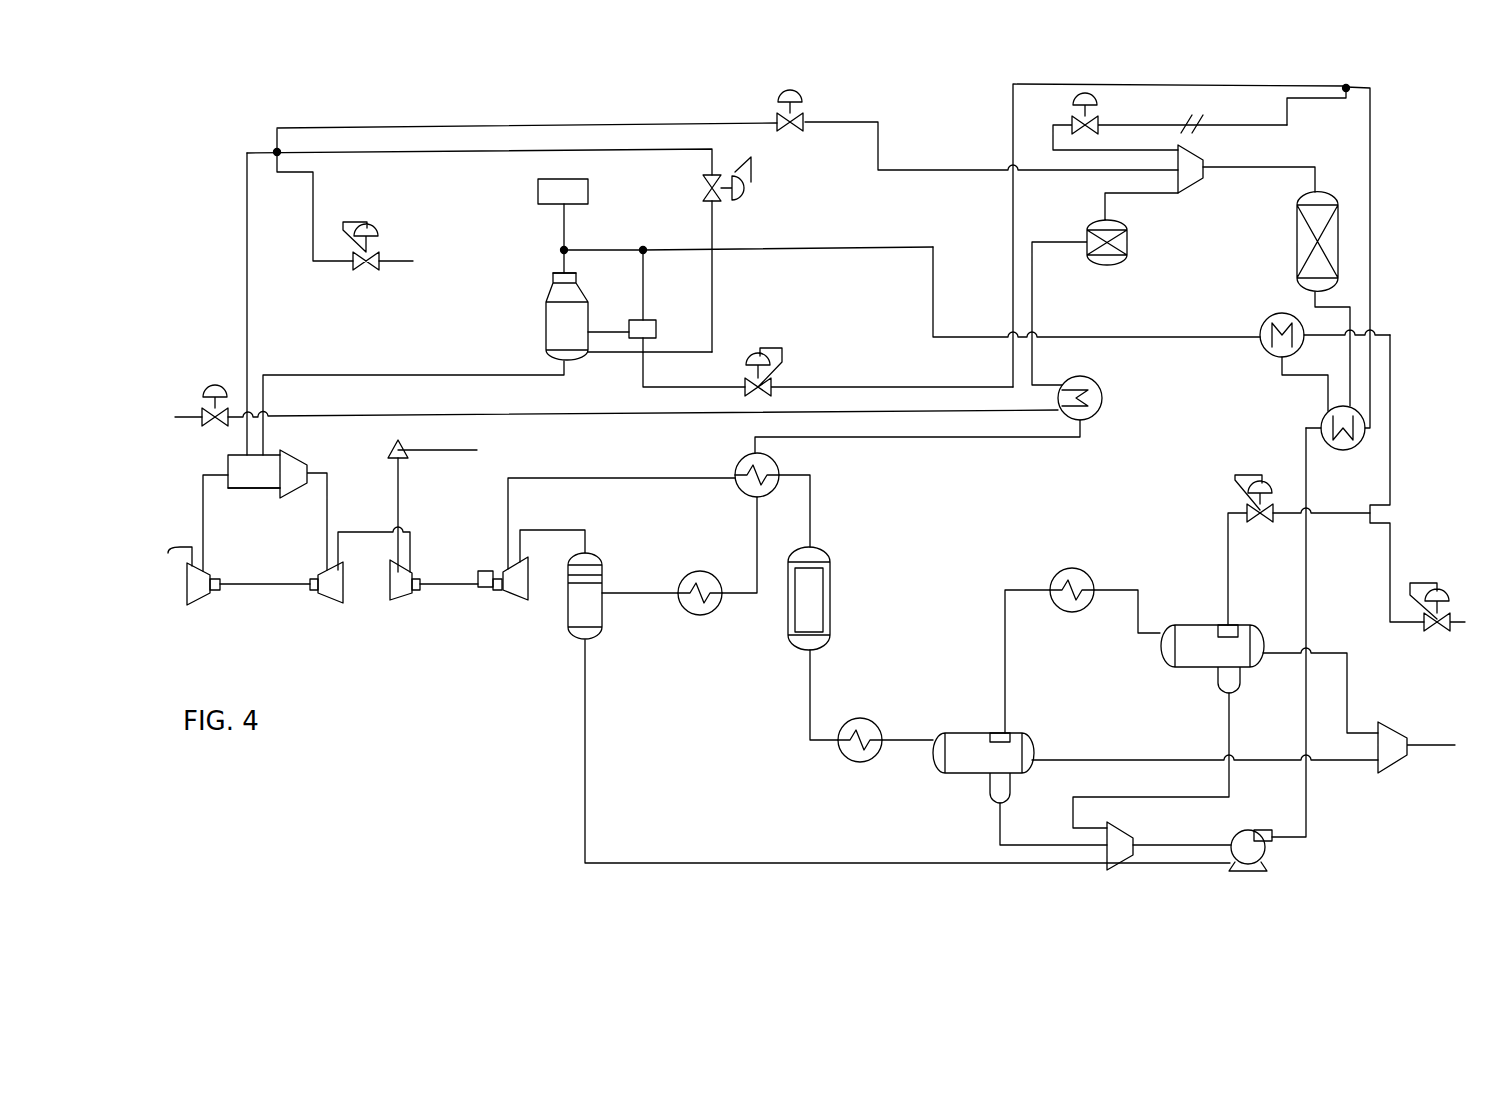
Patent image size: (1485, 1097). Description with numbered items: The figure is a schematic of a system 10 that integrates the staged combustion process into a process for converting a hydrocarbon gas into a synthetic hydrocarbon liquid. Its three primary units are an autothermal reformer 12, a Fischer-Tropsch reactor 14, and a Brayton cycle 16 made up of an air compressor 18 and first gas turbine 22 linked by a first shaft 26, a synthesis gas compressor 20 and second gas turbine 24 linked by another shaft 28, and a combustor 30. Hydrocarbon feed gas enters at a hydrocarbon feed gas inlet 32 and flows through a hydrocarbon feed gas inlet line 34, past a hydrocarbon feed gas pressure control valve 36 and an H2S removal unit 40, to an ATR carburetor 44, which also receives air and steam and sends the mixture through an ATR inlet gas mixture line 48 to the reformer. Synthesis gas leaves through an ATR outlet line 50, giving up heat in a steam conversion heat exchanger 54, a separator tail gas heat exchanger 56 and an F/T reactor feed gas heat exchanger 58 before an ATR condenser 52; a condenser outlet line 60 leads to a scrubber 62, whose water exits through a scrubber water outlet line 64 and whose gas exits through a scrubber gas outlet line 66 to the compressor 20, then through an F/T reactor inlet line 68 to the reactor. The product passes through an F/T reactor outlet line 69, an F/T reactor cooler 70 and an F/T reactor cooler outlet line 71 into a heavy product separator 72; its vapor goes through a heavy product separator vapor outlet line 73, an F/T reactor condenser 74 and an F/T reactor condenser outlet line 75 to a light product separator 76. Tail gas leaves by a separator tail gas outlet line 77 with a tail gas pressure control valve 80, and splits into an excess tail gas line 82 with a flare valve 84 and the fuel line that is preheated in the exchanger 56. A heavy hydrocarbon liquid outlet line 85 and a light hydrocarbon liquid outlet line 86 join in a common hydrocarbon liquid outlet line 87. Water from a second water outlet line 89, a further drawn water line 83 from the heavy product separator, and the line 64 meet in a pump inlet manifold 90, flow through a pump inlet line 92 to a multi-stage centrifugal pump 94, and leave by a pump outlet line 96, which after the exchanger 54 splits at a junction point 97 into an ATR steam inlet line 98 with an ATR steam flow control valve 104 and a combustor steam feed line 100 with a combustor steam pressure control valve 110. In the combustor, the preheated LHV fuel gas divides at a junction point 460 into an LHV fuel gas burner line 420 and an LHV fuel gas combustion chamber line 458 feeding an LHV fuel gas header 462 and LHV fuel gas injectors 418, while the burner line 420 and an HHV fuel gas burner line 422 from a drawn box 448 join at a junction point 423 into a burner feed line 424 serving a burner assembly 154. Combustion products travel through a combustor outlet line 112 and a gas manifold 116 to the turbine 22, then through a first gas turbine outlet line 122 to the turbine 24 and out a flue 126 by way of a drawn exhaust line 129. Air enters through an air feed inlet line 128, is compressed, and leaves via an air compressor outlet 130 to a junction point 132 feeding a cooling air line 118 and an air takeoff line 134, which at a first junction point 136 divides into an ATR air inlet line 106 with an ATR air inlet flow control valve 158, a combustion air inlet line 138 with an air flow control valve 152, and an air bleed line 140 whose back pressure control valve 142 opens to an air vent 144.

The system 10 is at (276, 108).
The autothermal reformer 12 is at (1297, 238).
The Fischer-Tropsch reactor 14 is at (830, 612).
The Brayton cycle 16 is at (270, 630).
The air compressor 18 is at (201, 605).
The synthesis gas compressor 20 is at (512, 598).
The first gas turbine 22 is at (325, 600).
The second gas turbine 24 is at (391, 600).
The first shaft 26 is at (278, 594).
The shaft 28 is at (465, 580).
The combustor 30 is at (546, 323).
The hydrocarbon feed gas inlet 32 is at (190, 410).
The hydrocarbon feed gas inlet line 34 is at (540, 420).
The hydrocarbon feed gas pressure control valve 36 is at (223, 386).
The H2S removal unit 40 is at (1127, 250).
The ATR carburetor 44 is at (1205, 192).
The ATR inlet gas mixture line 48 is at (1281, 175).
The ATR outlet line 50 is at (1350, 350).
The ATR condenser 52 is at (698, 618).
The steam conversion heat exchanger 54 is at (1349, 452).
The separator tail gas heat exchanger 56 is at (1266, 318).
The F/T reactor feed gas heat exchanger 58 is at (745, 460).
The condenser outlet line 60 is at (626, 600).
The scrubber 62 is at (570, 615).
The scrubber water outlet line 64 is at (588, 776).
The scrubber gas outlet line 66 is at (590, 540).
The F/T reactor inlet line 68 is at (812, 503).
The F/T reactor outlet line 69 is at (808, 712).
The F/T reactor cooler 70 is at (845, 758).
The F/T reactor cooler outlet line 71 is at (918, 740).
The heavy product separator 72 is at (984, 733).
The heavy product separator vapor outlet line 73 is at (1005, 645).
The F/T reactor condenser 74 is at (1052, 572).
The F/T reactor condenser outlet line 75 is at (1096, 588).
The light product separator 76 is at (1210, 622).
The separator tail gas outlet line 77 is at (1290, 520).
The tail gas pressure control valve 80 is at (1276, 496).
The excess tail gas line 82 is at (1390, 571).
The line 83 is at (1000, 835).
The flare valve 84 is at (1445, 598).
The heavy hydrocarbon liquid outlet line 85 is at (1103, 760).
The light hydrocarbon liquid outlet line 86 is at (1347, 700).
The common hydrocarbon liquid outlet line 87 is at (1428, 748).
The second water outlet line 89 is at (1190, 797).
The pump inlet manifold 90 is at (1125, 830).
The pump inlet line 92 is at (1190, 843).
The multi-stage centrifugal pump 94 is at (1245, 830).
The pump outlet line 96 is at (1304, 716).
The junction point 97 is at (1350, 93).
The ATR steam inlet line 98 is at (1238, 125).
The combustor steam feed line 100 is at (1012, 220).
The ATR steam flow control valve 104 is at (1096, 104).
The ATR air inlet line 106 is at (666, 118).
The combustor steam pressure control valve 110 is at (745, 366).
The combustor outlet line 112 is at (289, 374).
The gas manifold 116 is at (290, 457).
The cooling air line 118 is at (250, 490).
The first gas turbine outlet line 122 is at (355, 531).
The flue 126 is at (408, 446).
The air feed inlet line 128 is at (175, 541).
The line 129 is at (400, 492).
The air compressor outlet 130 is at (208, 547).
The junction point 132 is at (220, 470).
The air takeoff line 134 is at (247, 278).
The first junction point 136 is at (275, 150).
The combustion air inlet line 138 is at (323, 158).
The air bleed line 140 is at (312, 226).
The back pressure control valve 142 is at (378, 230).
The air vent 144 is at (402, 263).
The air flow control valve 152 is at (738, 200).
The burner assembly 154 is at (553, 278).
The ATR air inlet flow control valve 158 is at (797, 72).
The LHV fuel gas injectors 418 is at (605, 338).
The LHV fuel gas burner line 420 is at (583, 255).
The HHV fuel gas burner line 422 is at (558, 225).
The junction point 423 is at (566, 250).
The burner feed line 424 is at (561, 251).
The controller 448 is at (546, 180).
The LHV fuel gas combustion chamber line 458 is at (648, 302).
The junction point 460 is at (645, 246).
The LHV fuel gas header 462 is at (658, 330).